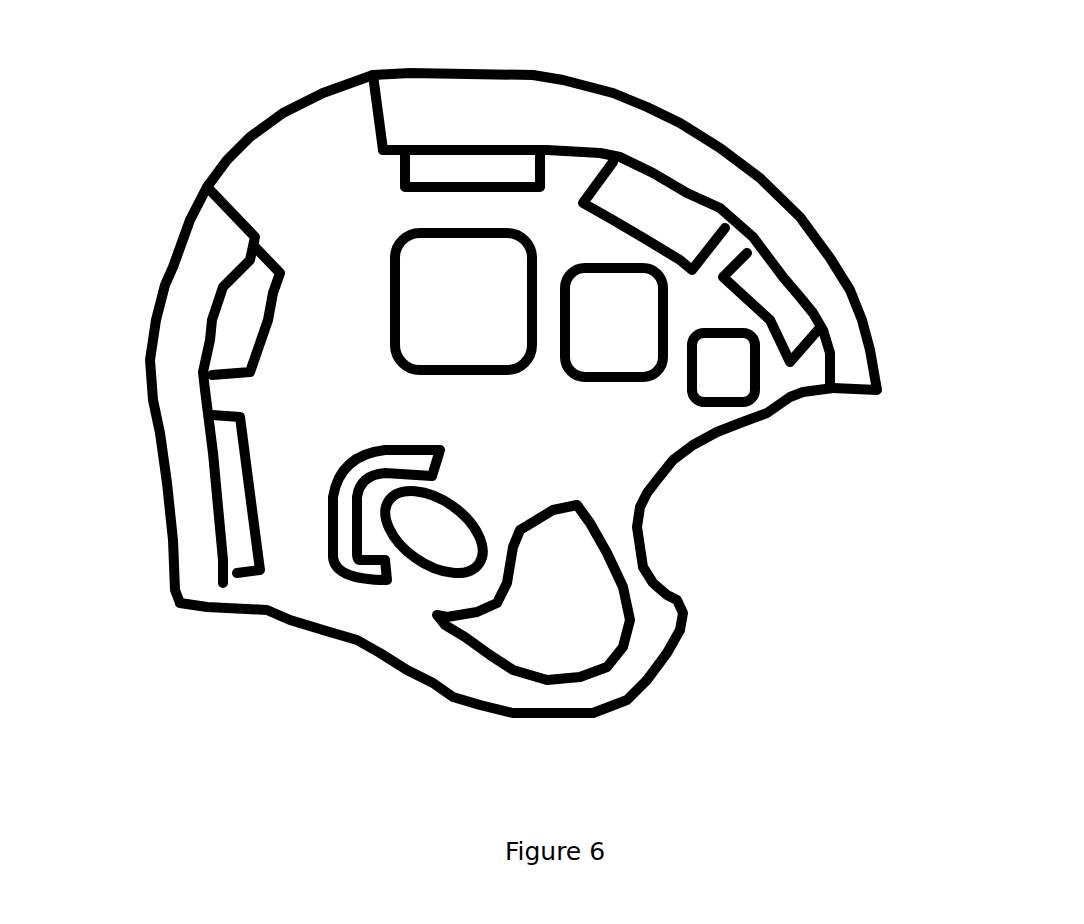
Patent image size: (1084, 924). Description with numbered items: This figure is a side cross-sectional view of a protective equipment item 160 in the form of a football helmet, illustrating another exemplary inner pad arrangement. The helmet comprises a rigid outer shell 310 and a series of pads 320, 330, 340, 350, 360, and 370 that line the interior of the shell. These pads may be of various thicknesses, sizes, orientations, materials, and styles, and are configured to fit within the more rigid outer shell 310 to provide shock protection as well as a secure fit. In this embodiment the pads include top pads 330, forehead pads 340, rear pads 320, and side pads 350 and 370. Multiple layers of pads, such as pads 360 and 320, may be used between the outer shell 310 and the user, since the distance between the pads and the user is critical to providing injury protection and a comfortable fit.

The protective equipment item 160 is at (555, 371).
The rigid outer shell 310 is at (283, 118).
The rear pads 320 is at (228, 475).
The top pads 330 is at (490, 160).
The forehead pads 340 is at (773, 308).
The side pads 350 is at (502, 350).
The pads 360 is at (490, 108).
The side pads 370 is at (353, 570).